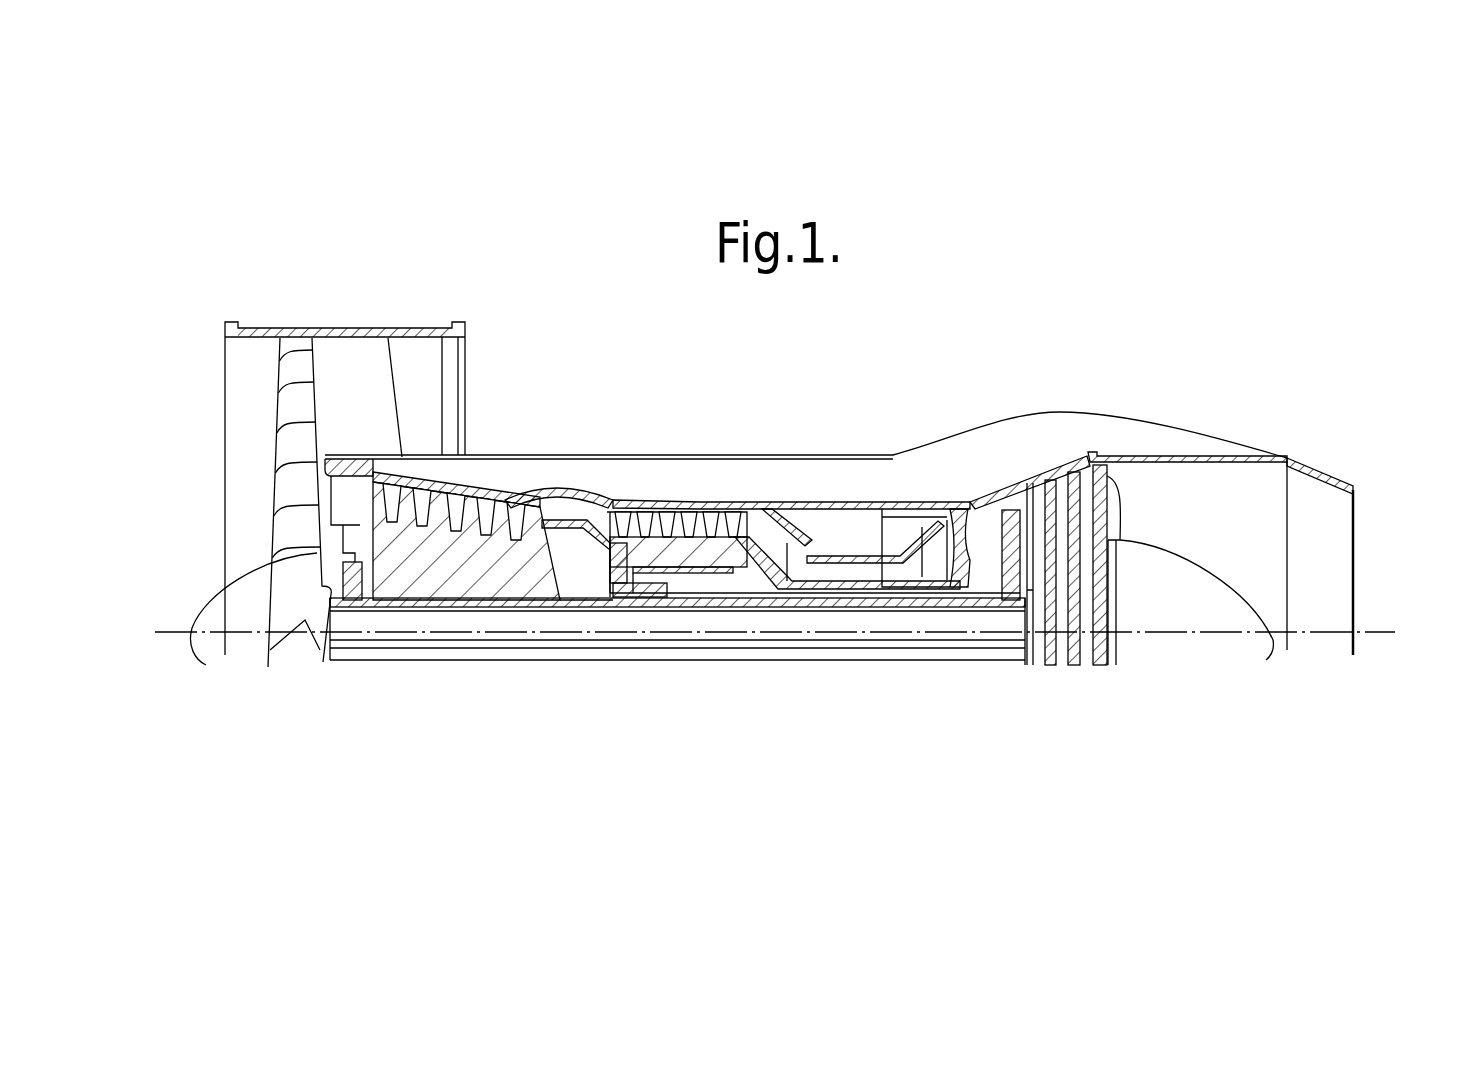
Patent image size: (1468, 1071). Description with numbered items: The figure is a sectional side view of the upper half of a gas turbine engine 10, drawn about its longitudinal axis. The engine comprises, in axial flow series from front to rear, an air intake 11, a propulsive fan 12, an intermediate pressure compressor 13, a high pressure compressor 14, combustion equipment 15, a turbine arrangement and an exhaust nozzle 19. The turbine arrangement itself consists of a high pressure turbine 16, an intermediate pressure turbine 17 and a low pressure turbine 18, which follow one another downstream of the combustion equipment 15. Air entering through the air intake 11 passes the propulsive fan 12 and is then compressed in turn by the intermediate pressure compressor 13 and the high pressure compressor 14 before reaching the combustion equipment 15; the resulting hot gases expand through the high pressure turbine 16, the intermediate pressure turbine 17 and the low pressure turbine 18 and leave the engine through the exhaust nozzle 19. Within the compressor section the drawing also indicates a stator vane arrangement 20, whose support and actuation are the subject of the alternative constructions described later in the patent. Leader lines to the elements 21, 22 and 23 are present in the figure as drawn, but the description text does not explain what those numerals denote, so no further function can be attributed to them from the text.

The gas turbine engine 10 is at (631, 410).
The air intake 11 is at (202, 472).
The propulsive fan 12 is at (313, 370).
The intermediate pressure compressor 13 is at (481, 495).
The high pressure compressor 14 is at (697, 503).
The combustion equipment 15 is at (863, 497).
The high pressure turbine 16 is at (960, 498).
The intermediate pressure turbine 17 is at (1011, 498).
The low pressure turbine 18 is at (1127, 486).
The exhaust nozzle 19 is at (1330, 587).
The stator vane arrangement 20 is at (781, 533).
The shaft 21 is at (867, 556).
The shaft 22 is at (840, 508).
The combustor casing 23 is at (811, 505).